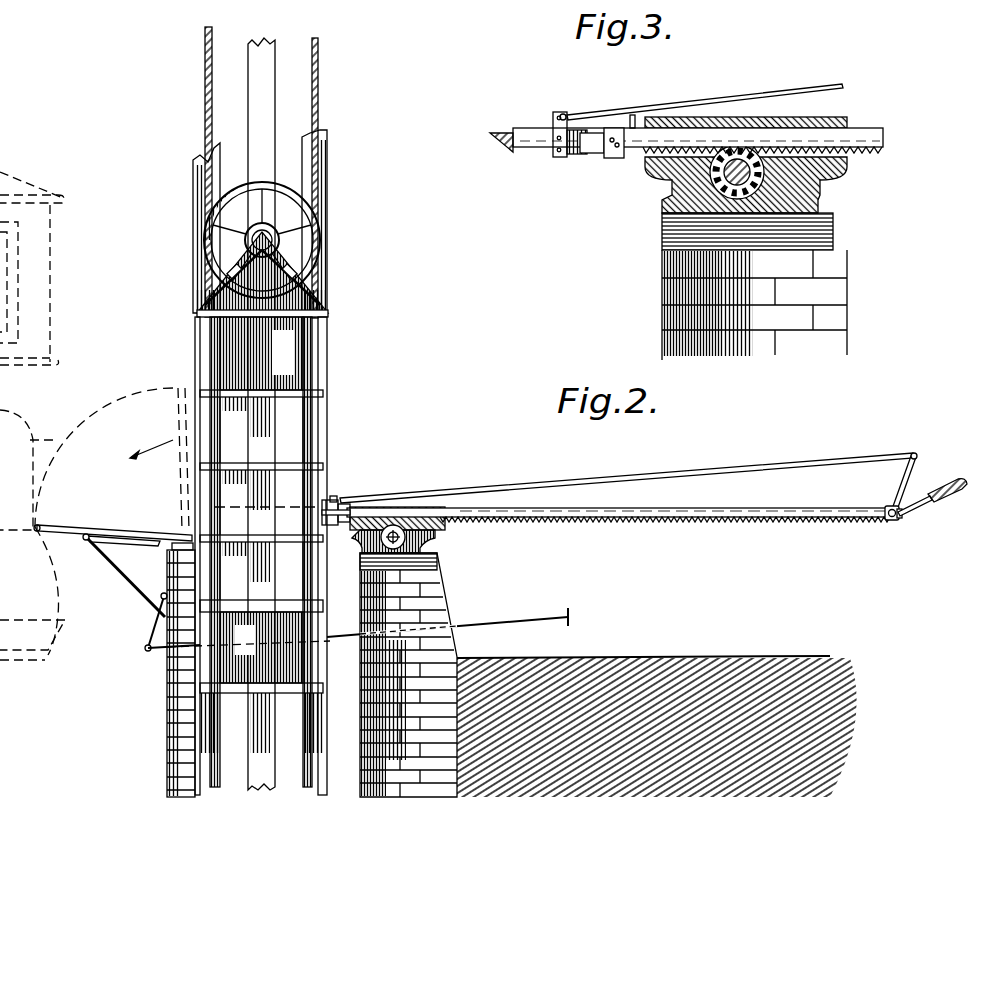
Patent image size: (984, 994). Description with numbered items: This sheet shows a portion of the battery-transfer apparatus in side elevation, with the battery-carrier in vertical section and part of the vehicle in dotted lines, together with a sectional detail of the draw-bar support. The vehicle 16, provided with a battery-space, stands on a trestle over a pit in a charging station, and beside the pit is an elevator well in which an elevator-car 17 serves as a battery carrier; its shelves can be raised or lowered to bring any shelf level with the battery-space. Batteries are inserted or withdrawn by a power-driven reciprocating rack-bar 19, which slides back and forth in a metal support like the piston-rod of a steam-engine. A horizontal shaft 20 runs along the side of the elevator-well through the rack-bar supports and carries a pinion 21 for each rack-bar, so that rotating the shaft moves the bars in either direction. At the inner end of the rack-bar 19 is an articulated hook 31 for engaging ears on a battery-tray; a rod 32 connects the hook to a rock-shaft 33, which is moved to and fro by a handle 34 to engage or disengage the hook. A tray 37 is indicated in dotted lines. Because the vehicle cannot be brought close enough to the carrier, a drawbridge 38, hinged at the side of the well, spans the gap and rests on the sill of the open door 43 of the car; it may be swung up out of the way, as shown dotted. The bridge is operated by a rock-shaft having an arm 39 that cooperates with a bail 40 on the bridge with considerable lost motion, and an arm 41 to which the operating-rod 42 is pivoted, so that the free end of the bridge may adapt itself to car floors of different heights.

In FIG. 2, the vehicle 16 is at (45, 290).
In FIG. 2, the elevator-car 17 is at (302, 370).
In FIG. 2, the rack-bar 19 is at (685, 521).
In FIG. 3, the rack-bar 19 is at (880, 130).
In FIG. 2, the horizontal shaft 20 is at (430, 540).
In FIG. 3, the horizontal shaft 20 is at (720, 172).
In FIG. 3, the pinion 21 is at (822, 182).
In FIG. 2, the hook 31 is at (329, 497).
In FIG. 3, the hook 31 is at (510, 132).
In FIG. 2, the rod 32 is at (737, 474).
In FIG. 3, the rod 32 is at (660, 104).
In FIG. 2, the rock-shaft 33 is at (891, 521).
In FIG. 2, the handle 34 is at (945, 482).
In FIG. 2, the tray 37 is at (236, 512).
In FIG. 2, the drawbridge 38 is at (130, 530).
In FIG. 2, the arm 39 is at (124, 575).
In FIG. 2, the bail 40 is at (155, 544).
In FIG. 2, the arm 41 is at (152, 636).
In FIG. 2, the operating-rod 42 is at (560, 613).
In FIG. 2, the door 43 is at (52, 568).